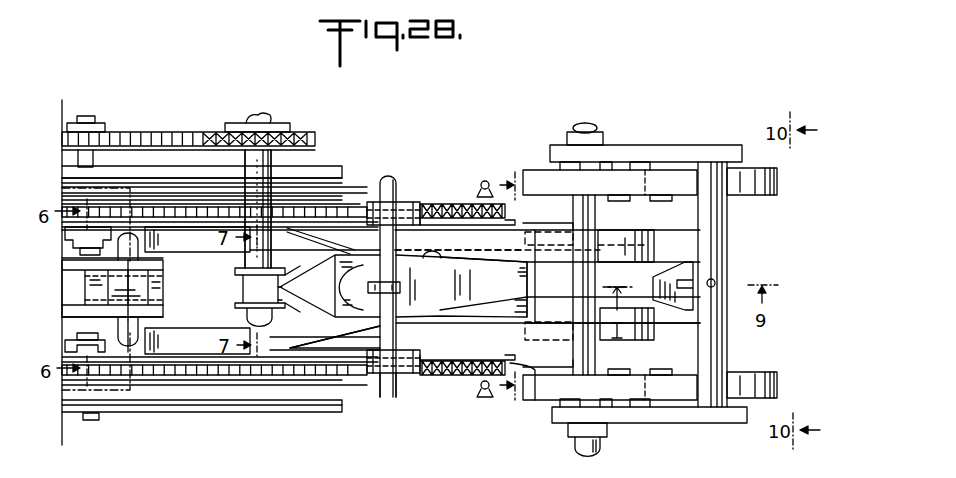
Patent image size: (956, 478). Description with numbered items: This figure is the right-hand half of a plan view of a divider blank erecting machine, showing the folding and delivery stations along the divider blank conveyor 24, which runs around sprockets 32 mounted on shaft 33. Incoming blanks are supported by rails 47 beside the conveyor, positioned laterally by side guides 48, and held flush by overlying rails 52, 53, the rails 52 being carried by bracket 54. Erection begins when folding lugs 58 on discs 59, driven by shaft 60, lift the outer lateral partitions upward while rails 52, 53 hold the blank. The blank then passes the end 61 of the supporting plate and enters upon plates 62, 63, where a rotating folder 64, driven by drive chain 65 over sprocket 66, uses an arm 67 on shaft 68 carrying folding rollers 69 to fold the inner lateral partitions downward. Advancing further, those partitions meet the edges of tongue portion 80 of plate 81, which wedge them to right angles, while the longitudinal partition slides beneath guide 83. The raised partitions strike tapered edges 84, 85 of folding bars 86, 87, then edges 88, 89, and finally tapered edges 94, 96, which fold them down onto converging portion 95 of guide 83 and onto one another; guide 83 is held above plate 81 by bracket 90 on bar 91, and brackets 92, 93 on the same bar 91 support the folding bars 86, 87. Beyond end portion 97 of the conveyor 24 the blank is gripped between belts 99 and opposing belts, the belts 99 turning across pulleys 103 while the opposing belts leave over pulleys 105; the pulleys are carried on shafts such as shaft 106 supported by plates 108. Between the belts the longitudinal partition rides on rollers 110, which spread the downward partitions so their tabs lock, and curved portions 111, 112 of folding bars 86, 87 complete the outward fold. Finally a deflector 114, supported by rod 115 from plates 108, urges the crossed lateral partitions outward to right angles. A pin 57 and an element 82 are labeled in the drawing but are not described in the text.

The divider blank conveyor 24 is at (226, 202).
The sprockets 32 is at (510, 206).
The shaft 33 is at (475, 200).
The rails 47 is at (165, 220).
The side guides 48 is at (335, 166).
The rails 52 is at (163, 260).
The rails 53 is at (190, 190).
The bracket 54 is at (100, 290).
The pin 57 is at (140, 334).
The folding lugs 58 is at (72, 234).
The discs 59 is at (85, 248).
The shaft 60 is at (95, 421).
The end of plate 61 is at (165, 300).
The plate 62 is at (197, 239).
The plate 63 is at (197, 341).
The rotating folder 64 is at (229, 302).
The drive chain 65 is at (136, 130).
The sprocket 66 is at (236, 121).
The arm 67 is at (260, 297).
The shaft 68 is at (258, 209).
The folding rollers 69 is at (297, 290).
The tongue portion 80 is at (330, 286).
The plate 81 is at (505, 298).
The post 82 is at (375, 290).
The guide 83 is at (461, 286).
The tapered edge 84 is at (320, 230).
The tapered edge 85 is at (320, 350).
The folding bar 86 is at (460, 242).
The folding bar 87 is at (548, 327).
The edge 88 is at (436, 256).
The edge 89 is at (432, 332).
The bracket 90 is at (402, 287).
The bar 91 is at (388, 397).
The bracket 92 is at (398, 203).
The bracket 93 is at (402, 368).
The tapered edge 94 is at (500, 262).
The converging portion 95 is at (492, 290).
The tapered edge 96 is at (518, 294).
The end portion 97 is at (532, 400).
The belts 99 is at (775, 186).
The pulleys 103 is at (660, 201).
The pulleys 105 is at (638, 201).
The shaft 106 is at (575, 450).
The plates 108 is at (722, 152).
The rollers 110 is at (563, 232).
The curved portion 111 is at (647, 243).
The curved portion 112 is at (654, 318).
The deflector 114 is at (686, 268).
The rod 115 is at (700, 282).